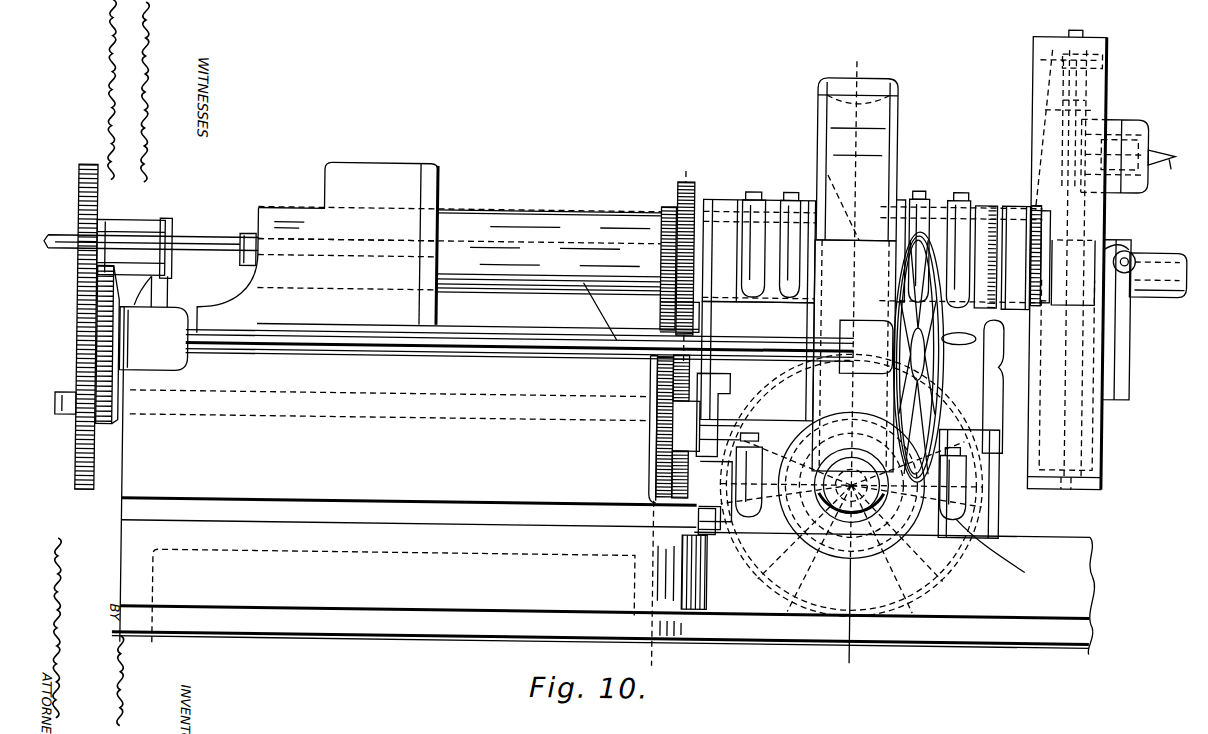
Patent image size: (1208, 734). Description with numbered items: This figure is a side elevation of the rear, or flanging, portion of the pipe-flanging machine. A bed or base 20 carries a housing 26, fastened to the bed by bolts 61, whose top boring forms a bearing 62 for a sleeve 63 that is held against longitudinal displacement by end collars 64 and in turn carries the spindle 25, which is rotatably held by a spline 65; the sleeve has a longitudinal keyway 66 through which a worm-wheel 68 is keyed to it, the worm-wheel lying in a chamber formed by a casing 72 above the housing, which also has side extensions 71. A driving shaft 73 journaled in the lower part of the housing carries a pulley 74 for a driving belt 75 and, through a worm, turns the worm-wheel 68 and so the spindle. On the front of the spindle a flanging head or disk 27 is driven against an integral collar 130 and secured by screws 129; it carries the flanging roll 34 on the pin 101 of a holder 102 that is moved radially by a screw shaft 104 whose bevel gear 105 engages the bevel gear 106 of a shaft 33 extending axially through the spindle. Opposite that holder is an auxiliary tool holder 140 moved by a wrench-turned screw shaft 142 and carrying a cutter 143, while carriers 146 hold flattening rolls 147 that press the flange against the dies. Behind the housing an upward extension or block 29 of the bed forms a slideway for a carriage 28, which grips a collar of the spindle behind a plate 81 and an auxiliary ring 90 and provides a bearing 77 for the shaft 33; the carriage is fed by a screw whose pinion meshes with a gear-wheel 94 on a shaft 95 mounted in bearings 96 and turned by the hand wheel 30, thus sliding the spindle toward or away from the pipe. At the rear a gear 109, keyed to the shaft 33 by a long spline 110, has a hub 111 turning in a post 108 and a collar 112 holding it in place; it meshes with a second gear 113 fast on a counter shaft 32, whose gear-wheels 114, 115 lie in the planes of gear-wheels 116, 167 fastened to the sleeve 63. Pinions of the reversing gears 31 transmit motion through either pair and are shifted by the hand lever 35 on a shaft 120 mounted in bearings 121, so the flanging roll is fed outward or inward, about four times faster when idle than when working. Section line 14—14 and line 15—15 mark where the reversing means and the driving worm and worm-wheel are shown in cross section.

The section line 14 is at (680, 179).
The section line 15 is at (852, 356).
The bed 20 is at (603, 590).
The spindle 25 is at (582, 211).
The housing 26 is at (758, 358).
The flanging head 27 is at (1102, 448).
The carriage 28 is at (369, 165).
The upward extension 29 is at (410, 427).
The hand wheel 30 is at (922, 228).
The reversing gears 31 is at (671, 319).
The counter shaft 32 is at (449, 420).
The shaft 33 is at (550, 241).
The flanging roll 34 is at (1166, 246).
The hand lever 35 is at (996, 350).
The bolts 61 is at (786, 188).
The bearing 62 is at (952, 188).
The sleeve 63 is at (958, 200).
The collars 64 is at (709, 196).
The spline 65 is at (998, 552).
The keyway 66 is at (717, 198).
The worm-wheel 68 is at (819, 120).
The extensions 71 is at (854, 356).
The casing 72 is at (878, 82).
The driving shaft 73 is at (811, 637).
The pulley 74 is at (952, 555).
The driving belt 75 is at (599, 320).
The bearing 77 is at (248, 238).
The plate 81 is at (424, 165).
The auxiliary ring 90 is at (436, 315).
The gear-wheel 94 is at (76, 356).
The shaft 95 is at (450, 369).
The bearings 96 is at (165, 372).
The pin 101 is at (1177, 291).
The holder 102 is at (1129, 323).
The screw shaft 104 is at (1093, 405).
The bevel gear 105 is at (1078, 273).
The bevel gear 106 is at (1078, 243).
The post 108 is at (167, 298).
The gear 109 is at (76, 180).
The spline 110 is at (184, 242).
The hub 111 is at (118, 227).
The collar 112 is at (164, 225).
The second gear 113 is at (83, 487).
The gear-wheel 114 is at (652, 476).
The gear-wheel 115 is at (670, 522).
The gear-wheel 116 is at (657, 202).
The shaft 120 is at (822, 417).
The bearings 121 is at (984, 475).
The screws 129 is at (1032, 204).
The collar 130 is at (1005, 207).
The tool holder 140 is at (1145, 119).
The screw shaft 142 is at (1086, 85).
The cutter 143 is at (1170, 167).
The carrier 146 is at (1110, 237).
The flattening roll 147 is at (1128, 249).
The gear-wheel 167 is at (682, 180).